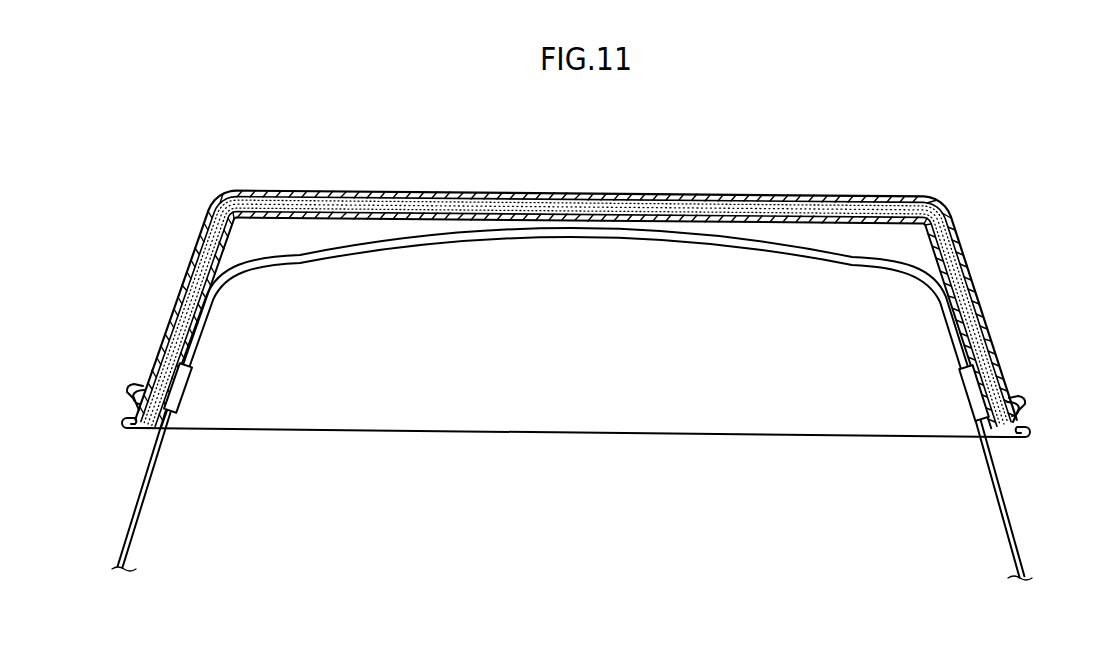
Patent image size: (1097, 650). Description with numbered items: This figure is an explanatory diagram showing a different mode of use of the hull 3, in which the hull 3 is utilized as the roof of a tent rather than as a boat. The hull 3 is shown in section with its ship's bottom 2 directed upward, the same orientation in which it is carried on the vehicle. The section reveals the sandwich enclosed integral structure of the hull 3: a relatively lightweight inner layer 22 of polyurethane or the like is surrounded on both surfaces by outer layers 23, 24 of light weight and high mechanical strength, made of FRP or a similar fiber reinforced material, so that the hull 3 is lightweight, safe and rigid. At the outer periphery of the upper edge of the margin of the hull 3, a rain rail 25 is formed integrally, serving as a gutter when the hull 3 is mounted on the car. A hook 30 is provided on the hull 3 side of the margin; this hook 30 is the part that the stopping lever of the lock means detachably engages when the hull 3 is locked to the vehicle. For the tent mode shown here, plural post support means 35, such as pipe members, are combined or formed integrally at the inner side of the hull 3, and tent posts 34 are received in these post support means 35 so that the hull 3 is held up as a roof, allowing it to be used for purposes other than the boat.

The ship's bottom 2 is at (576, 278).
The hull 3 is at (949, 211).
The inner layer 22 is at (397, 192).
The outer layer 23 is at (309, 190).
The outer layer 24 is at (335, 221).
The rain rail 25 is at (126, 419).
The hook 30 is at (128, 399).
The tent post 34 is at (128, 520).
The post support means 35 is at (190, 384).